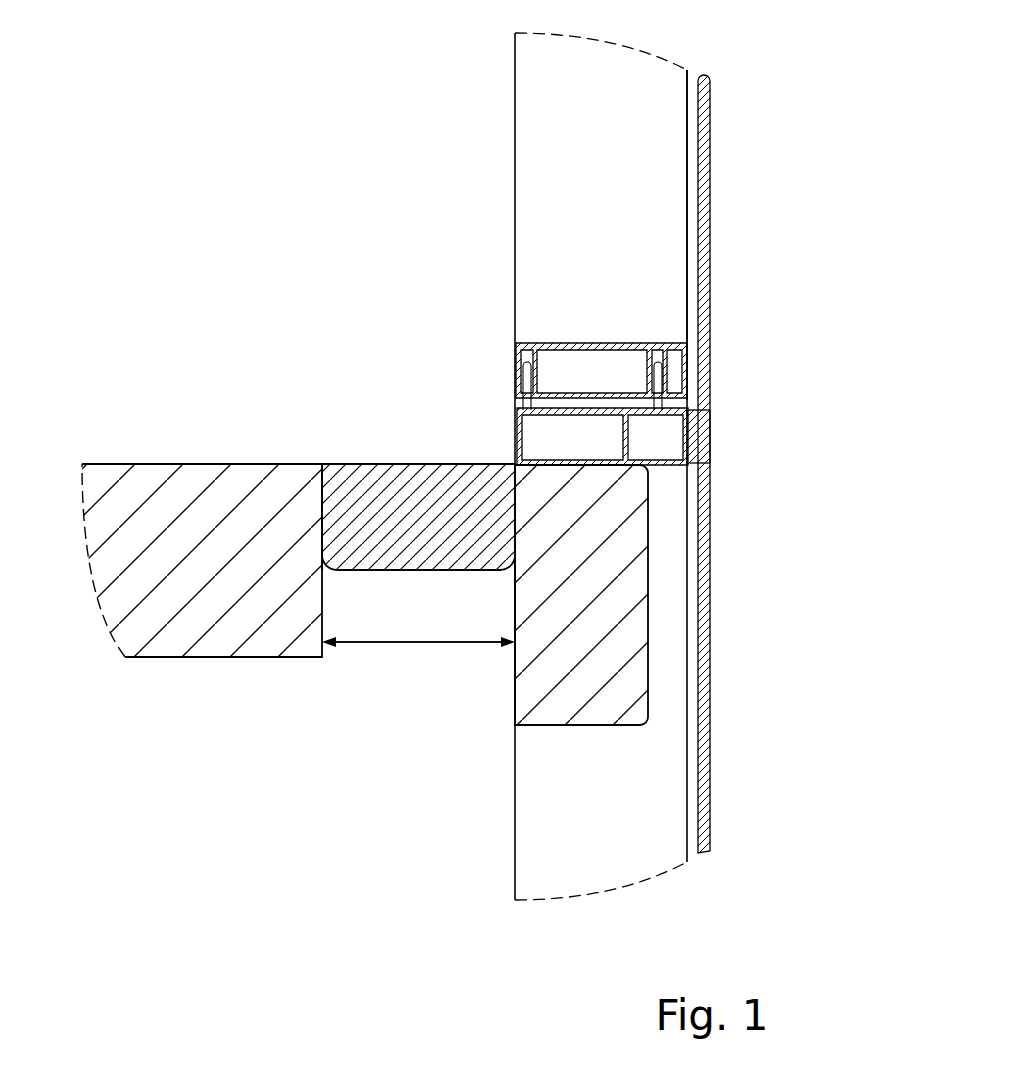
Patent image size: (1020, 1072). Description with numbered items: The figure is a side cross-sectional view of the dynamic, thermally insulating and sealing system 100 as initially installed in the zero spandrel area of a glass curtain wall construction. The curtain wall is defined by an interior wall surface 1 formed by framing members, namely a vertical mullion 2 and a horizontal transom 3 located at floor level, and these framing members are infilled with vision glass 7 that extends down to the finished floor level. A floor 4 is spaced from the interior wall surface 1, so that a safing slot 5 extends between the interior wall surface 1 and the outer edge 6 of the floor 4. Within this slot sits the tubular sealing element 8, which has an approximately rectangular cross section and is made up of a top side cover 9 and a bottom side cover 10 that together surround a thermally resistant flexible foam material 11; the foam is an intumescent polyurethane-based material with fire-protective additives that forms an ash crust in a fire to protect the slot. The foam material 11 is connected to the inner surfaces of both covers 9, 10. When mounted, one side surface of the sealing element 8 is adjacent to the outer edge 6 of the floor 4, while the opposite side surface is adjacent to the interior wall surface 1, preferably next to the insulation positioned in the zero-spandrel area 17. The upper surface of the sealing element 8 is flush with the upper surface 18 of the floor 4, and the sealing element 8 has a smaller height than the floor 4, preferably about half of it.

The interior wall surface 1 is at (513, 267).
The mullion 2 is at (647, 97).
The transom 3 is at (577, 412).
The floor 4 is at (168, 479).
The safing slot 5 is at (407, 645).
The outer edge of the floor 6 is at (322, 497).
The vision glass 7 is at (700, 157).
The tubular sealing element 8 is at (442, 458).
The top side cover 9 is at (462, 463).
The bottom side cover 10 is at (402, 572).
The thermally resistant flexible foam material 11 is at (355, 492).
The zero-spandrel area 17 is at (610, 537).
The upper surface of the floor 18 is at (202, 463).
The dynamic, thermally insulating and sealing system 100 is at (362, 436).